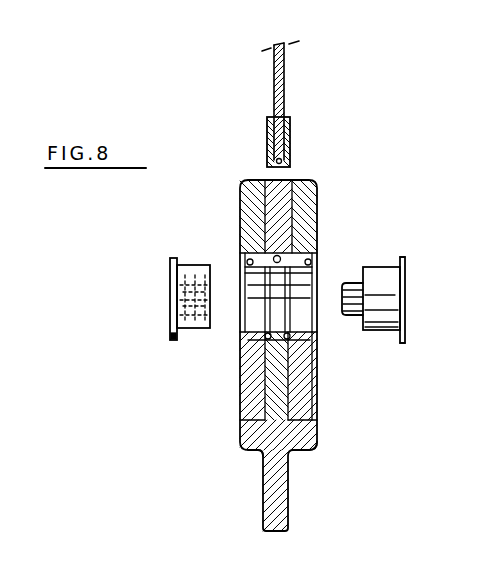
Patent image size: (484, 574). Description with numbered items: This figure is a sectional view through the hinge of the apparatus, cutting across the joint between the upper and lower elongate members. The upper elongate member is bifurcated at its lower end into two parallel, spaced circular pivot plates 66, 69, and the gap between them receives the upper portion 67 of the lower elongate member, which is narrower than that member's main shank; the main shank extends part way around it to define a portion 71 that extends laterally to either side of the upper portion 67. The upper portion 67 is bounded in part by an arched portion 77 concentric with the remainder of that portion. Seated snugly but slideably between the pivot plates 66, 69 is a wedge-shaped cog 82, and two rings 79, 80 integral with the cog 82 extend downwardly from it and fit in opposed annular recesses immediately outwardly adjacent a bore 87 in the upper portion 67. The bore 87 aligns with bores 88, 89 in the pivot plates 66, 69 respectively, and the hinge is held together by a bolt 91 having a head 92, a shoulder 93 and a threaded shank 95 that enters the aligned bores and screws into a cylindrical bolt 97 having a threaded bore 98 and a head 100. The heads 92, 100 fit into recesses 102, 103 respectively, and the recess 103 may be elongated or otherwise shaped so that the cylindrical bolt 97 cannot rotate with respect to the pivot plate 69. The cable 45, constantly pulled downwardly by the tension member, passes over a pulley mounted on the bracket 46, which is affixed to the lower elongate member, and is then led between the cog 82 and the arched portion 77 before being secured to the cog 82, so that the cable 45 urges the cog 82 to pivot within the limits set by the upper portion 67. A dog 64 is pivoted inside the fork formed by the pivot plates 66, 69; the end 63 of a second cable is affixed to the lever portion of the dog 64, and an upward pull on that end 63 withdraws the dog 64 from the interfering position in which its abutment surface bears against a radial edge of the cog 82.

The bracket 46 is at (290, 492).
The cable 45 is at (281, 257).
The end of the cable 63 is at (274, 78).
The dog 64 is at (267, 126).
The pivot plate 66 is at (312, 444).
The upper portion 67 is at (262, 412).
The pivot plate 69 is at (262, 440).
The portion 71 is at (255, 450).
The arched portion 77 is at (248, 258).
The ring 79 is at (300, 362).
The ring 80 is at (268, 378).
The cog 82 is at (292, 182).
The bore 87 is at (250, 338).
The bore 88 is at (313, 276).
The bore 89 is at (246, 324).
The bolt 91 is at (403, 285).
The head 92 is at (405, 262).
The shoulder 93 is at (398, 265).
The threaded shank 95 is at (351, 316).
The cylindrical bolt 97 is at (174, 342).
The threaded bore 98 is at (192, 266).
The head 100 is at (172, 262).
The recess 102 is at (314, 262).
The recess 103 is at (250, 264).